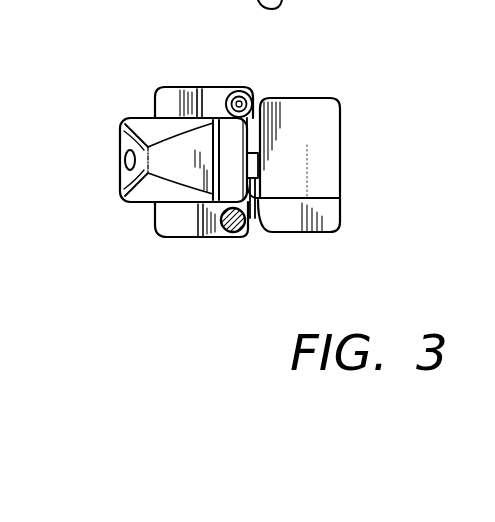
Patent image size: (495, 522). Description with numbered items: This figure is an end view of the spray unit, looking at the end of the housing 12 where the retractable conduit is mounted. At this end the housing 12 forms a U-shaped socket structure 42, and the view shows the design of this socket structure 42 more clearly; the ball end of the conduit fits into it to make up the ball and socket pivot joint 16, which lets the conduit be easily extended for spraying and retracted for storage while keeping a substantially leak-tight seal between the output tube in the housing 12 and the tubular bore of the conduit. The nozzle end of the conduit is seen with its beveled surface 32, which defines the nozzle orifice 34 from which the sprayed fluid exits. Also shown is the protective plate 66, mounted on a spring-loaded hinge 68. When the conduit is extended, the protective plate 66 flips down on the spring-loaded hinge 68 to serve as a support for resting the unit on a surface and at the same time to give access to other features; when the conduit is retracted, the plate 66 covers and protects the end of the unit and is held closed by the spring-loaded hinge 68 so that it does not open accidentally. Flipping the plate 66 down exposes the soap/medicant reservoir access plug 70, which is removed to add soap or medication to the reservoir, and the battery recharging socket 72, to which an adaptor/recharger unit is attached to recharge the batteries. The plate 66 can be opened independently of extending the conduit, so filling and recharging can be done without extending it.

The housing 12 is at (150, 82).
The pivot joint 16 is at (256, 250).
The beveled surface 32 is at (127, 143).
The nozzle orifice 34 is at (123, 163).
The U-shaped socket structure 42 is at (207, 98).
The protective plate 66 is at (320, 97).
The spring-loaded hinge 68 is at (338, 198).
The soap/medicant reservoir access plug 70 is at (246, 218).
The battery recharging socket 72 is at (245, 89).